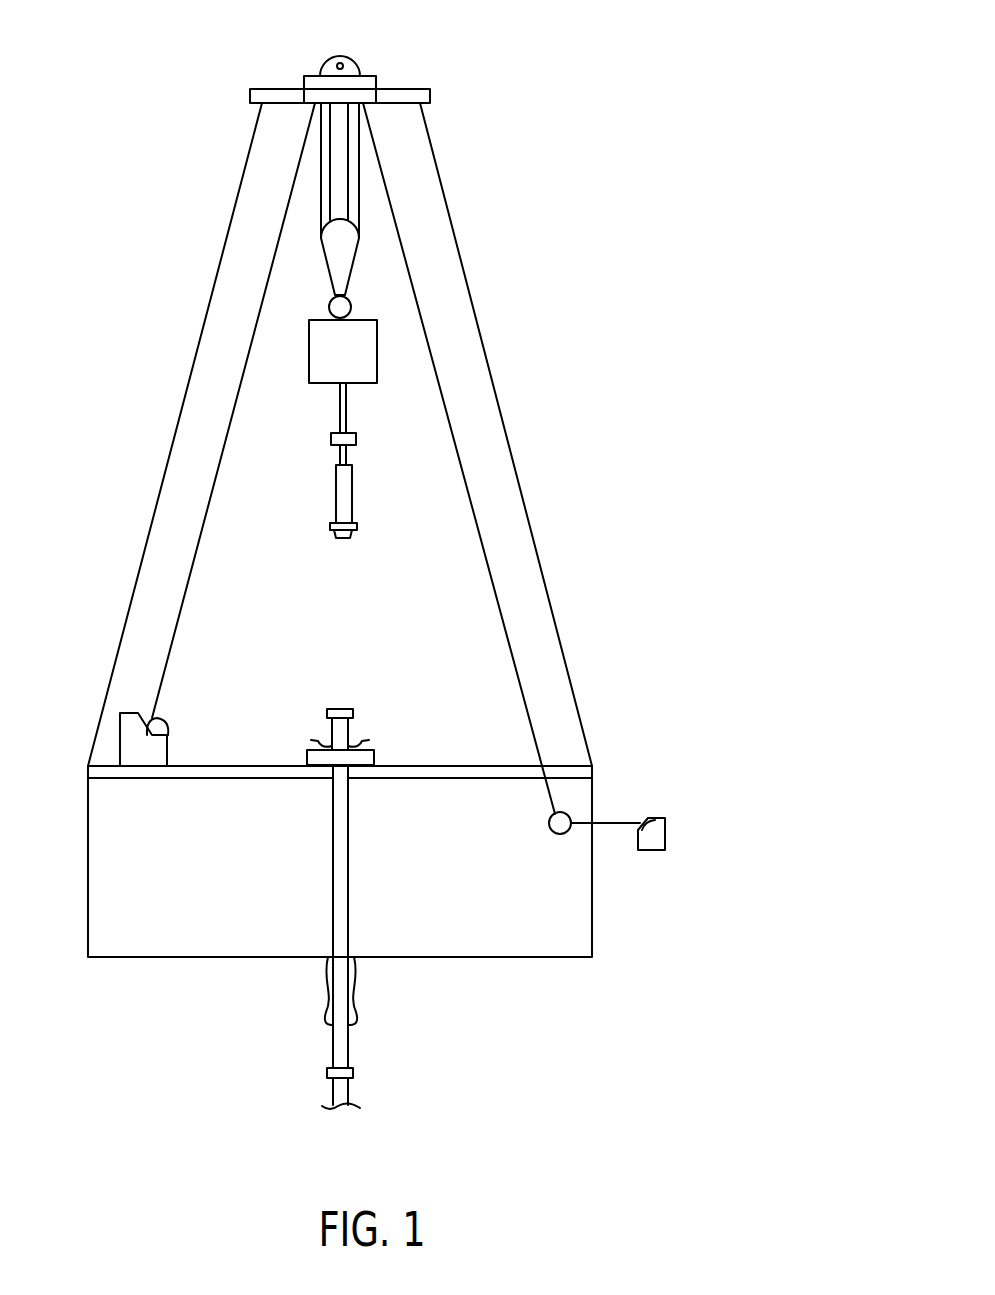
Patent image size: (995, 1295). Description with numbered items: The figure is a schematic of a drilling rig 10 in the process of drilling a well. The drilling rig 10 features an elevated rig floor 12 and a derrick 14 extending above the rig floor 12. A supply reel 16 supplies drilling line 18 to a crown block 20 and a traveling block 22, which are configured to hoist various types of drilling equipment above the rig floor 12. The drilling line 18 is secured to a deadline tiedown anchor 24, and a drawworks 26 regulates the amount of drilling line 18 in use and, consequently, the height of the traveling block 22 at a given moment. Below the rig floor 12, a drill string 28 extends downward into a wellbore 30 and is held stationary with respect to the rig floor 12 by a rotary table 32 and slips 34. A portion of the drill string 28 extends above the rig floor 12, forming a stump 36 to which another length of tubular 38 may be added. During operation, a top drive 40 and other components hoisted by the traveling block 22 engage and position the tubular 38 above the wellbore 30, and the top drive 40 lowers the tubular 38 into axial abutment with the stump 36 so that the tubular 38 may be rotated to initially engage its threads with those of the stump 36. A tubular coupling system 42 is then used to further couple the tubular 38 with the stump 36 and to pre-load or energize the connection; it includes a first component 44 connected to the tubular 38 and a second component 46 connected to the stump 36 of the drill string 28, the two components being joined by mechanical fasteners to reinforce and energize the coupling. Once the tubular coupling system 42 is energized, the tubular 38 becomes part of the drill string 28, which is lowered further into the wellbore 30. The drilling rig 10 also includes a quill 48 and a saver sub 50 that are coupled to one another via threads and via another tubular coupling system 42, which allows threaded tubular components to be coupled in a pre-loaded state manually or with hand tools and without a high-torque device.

The drilling rig 10 is at (520, 117).
The rig floor 12 is at (217, 772).
The derrick 14 is at (505, 437).
The supply reel 16 is at (652, 850).
The drilling line 18 is at (233, 412).
The crown block 20 is at (334, 57).
The traveling block 22 is at (355, 268).
The deadline tiedown anchor 24 is at (558, 835).
The drawworks 26 is at (168, 733).
The drill string 28 is at (348, 895).
The wellbore 30 is at (360, 1022).
The rotary table 32 is at (307, 758).
The slips 34 is at (363, 743).
The stump 36 is at (352, 722).
The tubular 38 is at (352, 487).
The top drive 40 is at (309, 352).
The tubular coupling system 42 is at (324, 541).
The first component 44 is at (353, 533).
The second component 46 is at (338, 708).
The quill 48 is at (346, 410).
The saver sub 50 is at (346, 457).